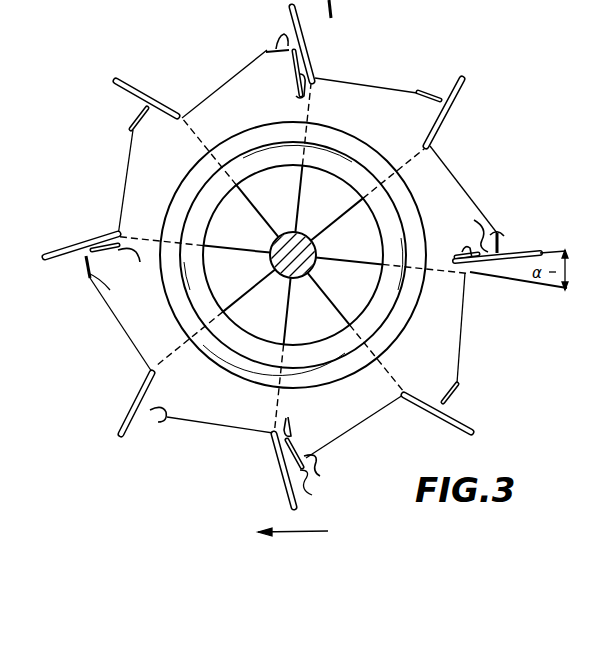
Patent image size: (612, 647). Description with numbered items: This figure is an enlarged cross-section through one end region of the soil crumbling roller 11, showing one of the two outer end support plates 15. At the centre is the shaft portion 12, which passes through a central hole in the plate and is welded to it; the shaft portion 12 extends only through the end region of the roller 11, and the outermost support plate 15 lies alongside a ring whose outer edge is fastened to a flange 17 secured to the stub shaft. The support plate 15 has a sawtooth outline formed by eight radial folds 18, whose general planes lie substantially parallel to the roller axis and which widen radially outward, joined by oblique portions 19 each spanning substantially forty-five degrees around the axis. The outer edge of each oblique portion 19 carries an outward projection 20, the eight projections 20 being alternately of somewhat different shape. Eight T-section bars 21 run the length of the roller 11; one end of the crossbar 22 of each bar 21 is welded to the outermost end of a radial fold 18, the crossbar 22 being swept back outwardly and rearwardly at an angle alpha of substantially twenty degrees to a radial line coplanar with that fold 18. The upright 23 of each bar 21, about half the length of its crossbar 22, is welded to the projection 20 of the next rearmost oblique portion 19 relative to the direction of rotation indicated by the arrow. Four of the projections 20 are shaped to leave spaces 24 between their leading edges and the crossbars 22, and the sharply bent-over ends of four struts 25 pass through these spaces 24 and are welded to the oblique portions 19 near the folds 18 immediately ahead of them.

The soil crumbling roller 11 is at (405, 80).
The shaft portion 12 is at (301, 232).
The support plate 15 is at (136, 169).
The flange 17 is at (172, 295).
The radial fold 18 is at (316, 118).
The oblique portion 19 is at (224, 96).
The outward projection 20 is at (284, 43).
The T-section bar 21 is at (310, 50).
The crossbar 22 is at (153, 95).
The upright 23 is at (132, 116).
The space 24 is at (301, 62).
The strut 25 is at (296, 94).